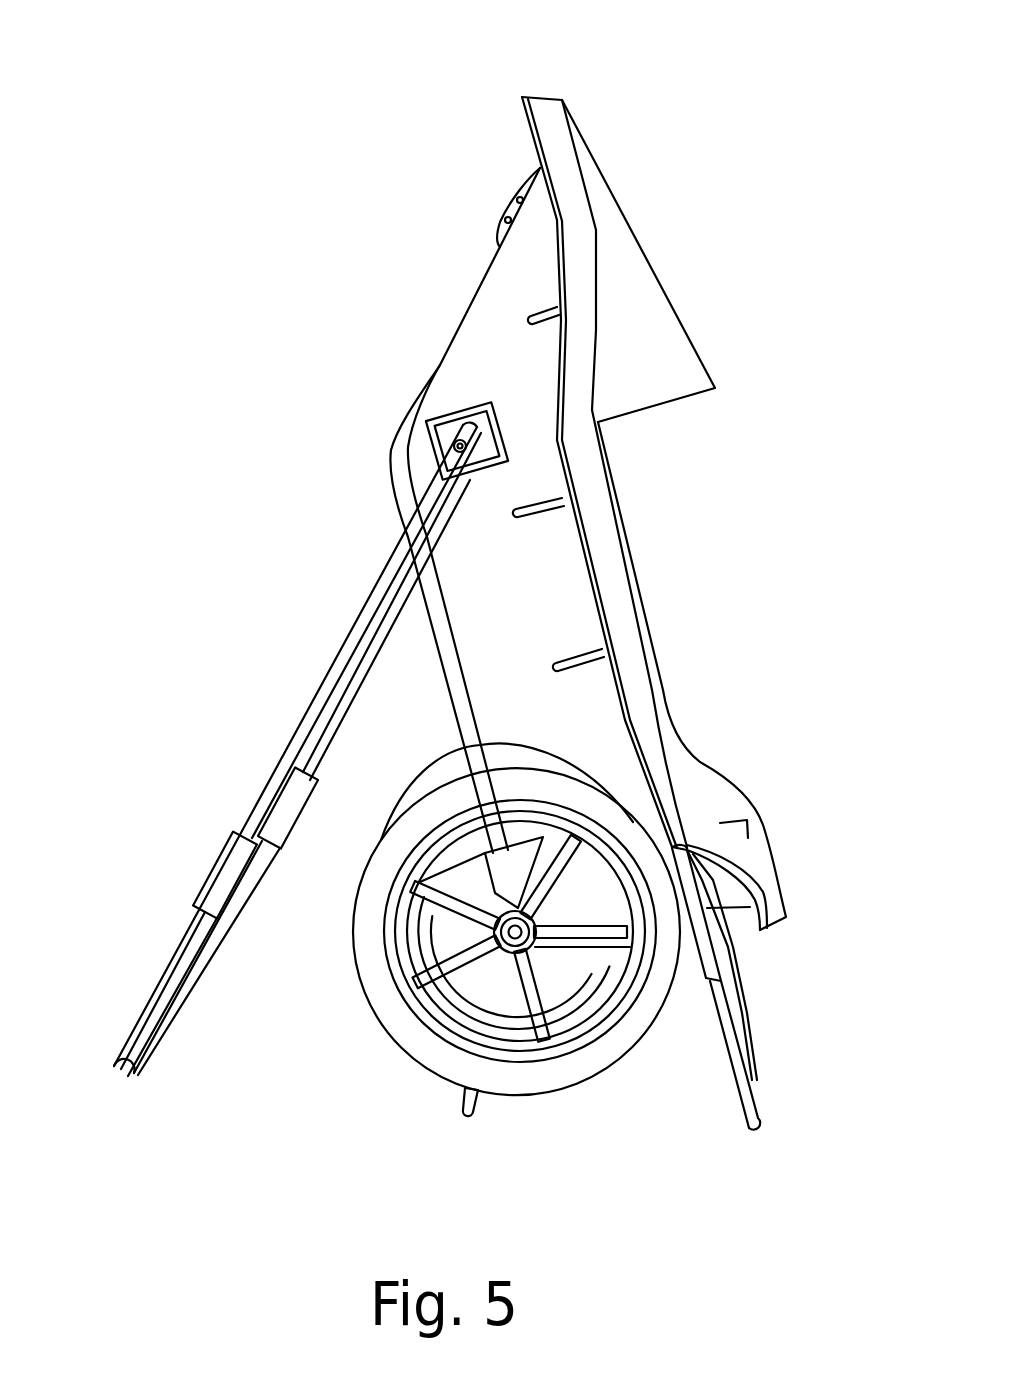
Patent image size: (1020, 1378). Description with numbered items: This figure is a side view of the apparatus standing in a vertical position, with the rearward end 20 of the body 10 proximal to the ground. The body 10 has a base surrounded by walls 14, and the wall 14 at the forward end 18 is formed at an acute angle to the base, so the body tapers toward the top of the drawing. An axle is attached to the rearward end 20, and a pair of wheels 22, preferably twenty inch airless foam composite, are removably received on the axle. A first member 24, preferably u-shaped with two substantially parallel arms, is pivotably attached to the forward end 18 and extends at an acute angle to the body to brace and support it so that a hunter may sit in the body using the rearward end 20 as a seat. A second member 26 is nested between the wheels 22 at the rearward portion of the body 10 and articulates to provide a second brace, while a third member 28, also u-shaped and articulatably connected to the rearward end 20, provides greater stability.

The body 10 is at (488, 325).
The walls 14 is at (612, 598).
The forward end 18 is at (543, 100).
The rearward end 20 is at (770, 920).
The wheels 22 is at (440, 762).
The first member 24 is at (150, 993).
The second member 26 is at (477, 1093).
The third member 28 is at (757, 1063).